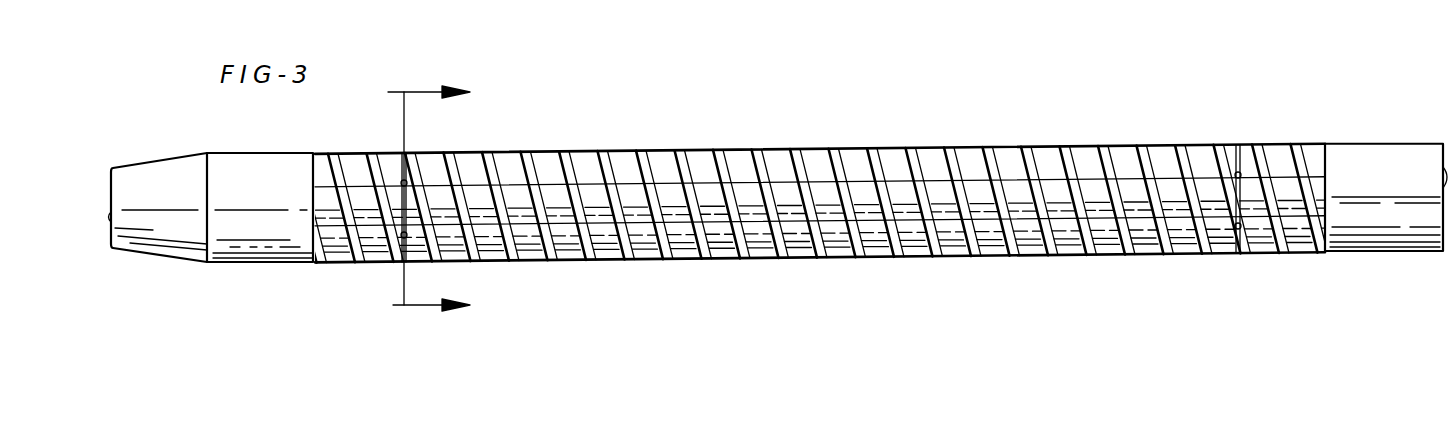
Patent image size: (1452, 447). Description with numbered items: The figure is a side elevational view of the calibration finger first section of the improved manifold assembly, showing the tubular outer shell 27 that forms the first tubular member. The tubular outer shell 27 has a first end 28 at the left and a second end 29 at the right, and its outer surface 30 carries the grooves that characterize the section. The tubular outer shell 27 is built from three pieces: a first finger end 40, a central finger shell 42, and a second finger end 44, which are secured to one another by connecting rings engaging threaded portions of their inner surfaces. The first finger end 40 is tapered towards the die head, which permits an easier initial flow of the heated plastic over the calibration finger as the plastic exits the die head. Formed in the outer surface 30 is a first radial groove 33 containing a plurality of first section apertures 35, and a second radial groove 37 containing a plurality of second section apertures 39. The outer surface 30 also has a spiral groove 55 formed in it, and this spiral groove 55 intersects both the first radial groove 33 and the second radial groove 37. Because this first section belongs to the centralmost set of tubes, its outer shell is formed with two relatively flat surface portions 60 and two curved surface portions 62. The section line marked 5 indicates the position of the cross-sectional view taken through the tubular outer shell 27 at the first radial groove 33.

The section line 5- 5 is at (418, 200).
The tubular outer shell 27 is at (877, 213).
The first end 28 is at (143, 233).
The second end 29 is at (1446, 187).
The outer surface 30 is at (665, 235).
The first radial groove 33 is at (405, 245).
The first section apertures 35 is at (398, 176).
The second radial groove 37 is at (1240, 255).
The second section apertures 39 is at (1240, 148).
The first finger end 40 is at (247, 228).
The finger shell 42 is at (797, 258).
The second finger end 44 is at (1397, 255).
The spiral groove 55 is at (1135, 230).
The flat surface portions 60 is at (637, 188).
The curved surface portions 62 is at (773, 155).